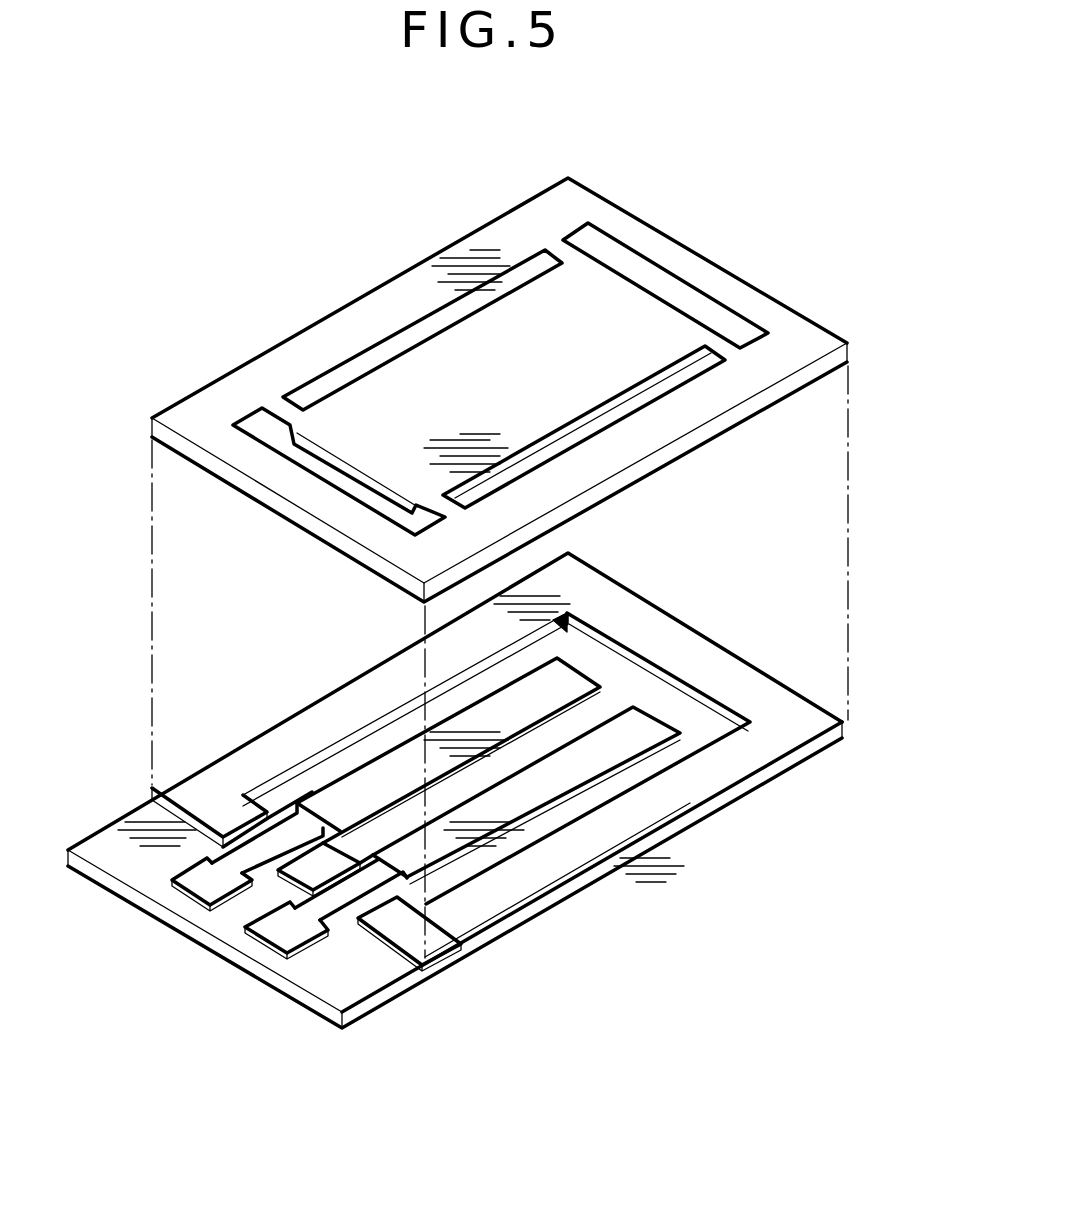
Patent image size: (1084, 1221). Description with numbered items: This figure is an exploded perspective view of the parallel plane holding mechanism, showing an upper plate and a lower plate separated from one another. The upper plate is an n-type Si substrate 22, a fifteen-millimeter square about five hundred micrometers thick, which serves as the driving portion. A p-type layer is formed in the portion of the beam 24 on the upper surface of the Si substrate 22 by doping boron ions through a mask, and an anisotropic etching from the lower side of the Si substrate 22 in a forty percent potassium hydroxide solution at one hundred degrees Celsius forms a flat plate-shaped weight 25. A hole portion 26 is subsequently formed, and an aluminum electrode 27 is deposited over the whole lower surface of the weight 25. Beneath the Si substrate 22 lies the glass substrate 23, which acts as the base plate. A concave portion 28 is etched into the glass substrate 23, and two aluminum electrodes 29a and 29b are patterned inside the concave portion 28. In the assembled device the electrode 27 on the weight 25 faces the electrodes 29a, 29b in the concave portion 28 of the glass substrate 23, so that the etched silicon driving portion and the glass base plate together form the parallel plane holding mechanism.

The Si substrate 22 is at (846, 372).
The glass substrate 23 is at (762, 776).
The beam 24 is at (733, 350).
The weight 25 is at (677, 342).
The hole portion 26 is at (643, 277).
The aluminum electrode 27 is at (647, 395).
The concave portion 28 is at (688, 717).
The aluminum electrode 29a is at (387, 782).
The aluminum electrode 29b is at (615, 745).